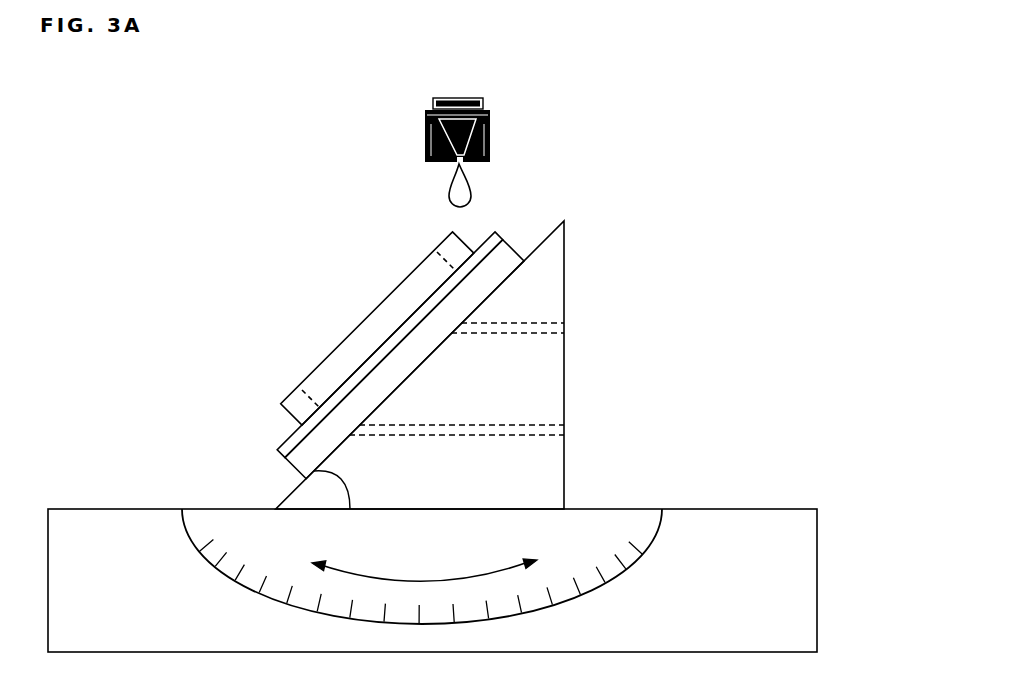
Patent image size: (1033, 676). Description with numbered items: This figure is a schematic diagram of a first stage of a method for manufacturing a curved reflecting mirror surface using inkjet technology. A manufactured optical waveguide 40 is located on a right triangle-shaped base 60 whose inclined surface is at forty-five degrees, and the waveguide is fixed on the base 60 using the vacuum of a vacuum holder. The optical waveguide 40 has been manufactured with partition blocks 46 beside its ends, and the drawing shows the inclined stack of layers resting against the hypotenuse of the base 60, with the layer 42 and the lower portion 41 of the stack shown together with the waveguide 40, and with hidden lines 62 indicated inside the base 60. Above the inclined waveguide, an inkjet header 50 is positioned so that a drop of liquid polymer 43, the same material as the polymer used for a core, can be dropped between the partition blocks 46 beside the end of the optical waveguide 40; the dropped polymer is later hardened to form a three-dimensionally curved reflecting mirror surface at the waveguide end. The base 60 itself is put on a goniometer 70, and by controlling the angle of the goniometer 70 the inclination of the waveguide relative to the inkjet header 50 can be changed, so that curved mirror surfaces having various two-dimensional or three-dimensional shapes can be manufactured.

The optical waveguide 40 is at (397, 303).
The lower layer / electrode 41 is at (315, 448).
The thin film 42 is at (353, 375).
The liquid polymer 43 is at (473, 190).
The partition block 46 is at (448, 250).
The inkjet header 50 is at (488, 135).
The base 60 is at (545, 292).
The light paths 62 is at (551, 331).
The goniometer 70 is at (610, 523).